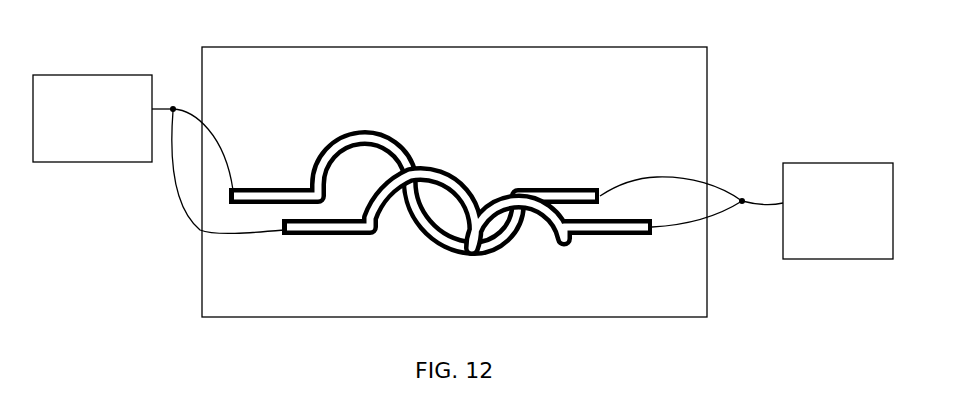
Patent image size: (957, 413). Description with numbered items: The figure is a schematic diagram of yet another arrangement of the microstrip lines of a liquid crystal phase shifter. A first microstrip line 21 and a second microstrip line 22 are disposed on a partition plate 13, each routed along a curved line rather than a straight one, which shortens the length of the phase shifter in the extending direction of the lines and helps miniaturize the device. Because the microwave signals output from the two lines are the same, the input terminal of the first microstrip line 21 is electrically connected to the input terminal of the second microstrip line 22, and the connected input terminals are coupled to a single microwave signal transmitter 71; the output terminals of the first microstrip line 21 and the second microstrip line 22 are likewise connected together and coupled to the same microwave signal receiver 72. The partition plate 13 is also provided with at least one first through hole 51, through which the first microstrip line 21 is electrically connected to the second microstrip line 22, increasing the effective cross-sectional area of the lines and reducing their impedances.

The partition plate 13 is at (217, 277).
The first microstrip line 21 is at (452, 172).
The second microstrip line 22 is at (363, 137).
The first through hole 51 is at (466, 250).
The microwave signal transmitter 71 is at (137, 74).
The microwave signal receiver 72 is at (817, 163).